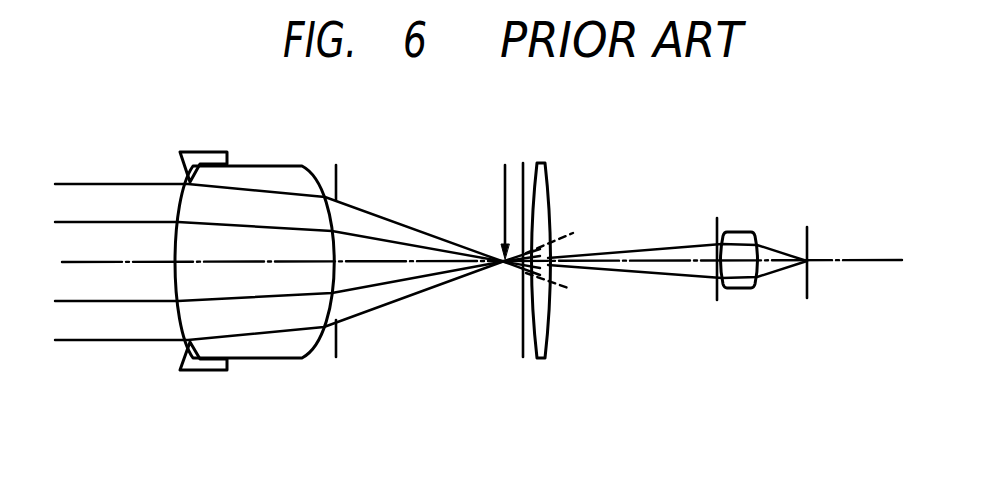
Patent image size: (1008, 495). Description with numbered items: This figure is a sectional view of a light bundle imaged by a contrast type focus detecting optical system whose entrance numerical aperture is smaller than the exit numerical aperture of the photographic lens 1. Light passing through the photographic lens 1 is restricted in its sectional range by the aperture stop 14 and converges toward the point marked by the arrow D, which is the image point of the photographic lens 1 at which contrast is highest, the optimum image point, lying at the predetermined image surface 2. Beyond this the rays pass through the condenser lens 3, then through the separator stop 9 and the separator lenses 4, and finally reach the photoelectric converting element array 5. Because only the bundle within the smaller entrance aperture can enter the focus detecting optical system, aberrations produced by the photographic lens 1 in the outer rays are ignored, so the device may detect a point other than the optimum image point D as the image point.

The photographic lens 1 is at (263, 166).
The aperture stop 14 is at (338, 177).
The optimum image point D is at (503, 182).
The predetermined image surface 2 is at (523, 170).
The condenser lens 3 is at (545, 163).
The separator stop 9 is at (717, 227).
The separator lenses 4 is at (743, 232).
The photoelectric converting element array 5 is at (808, 227).